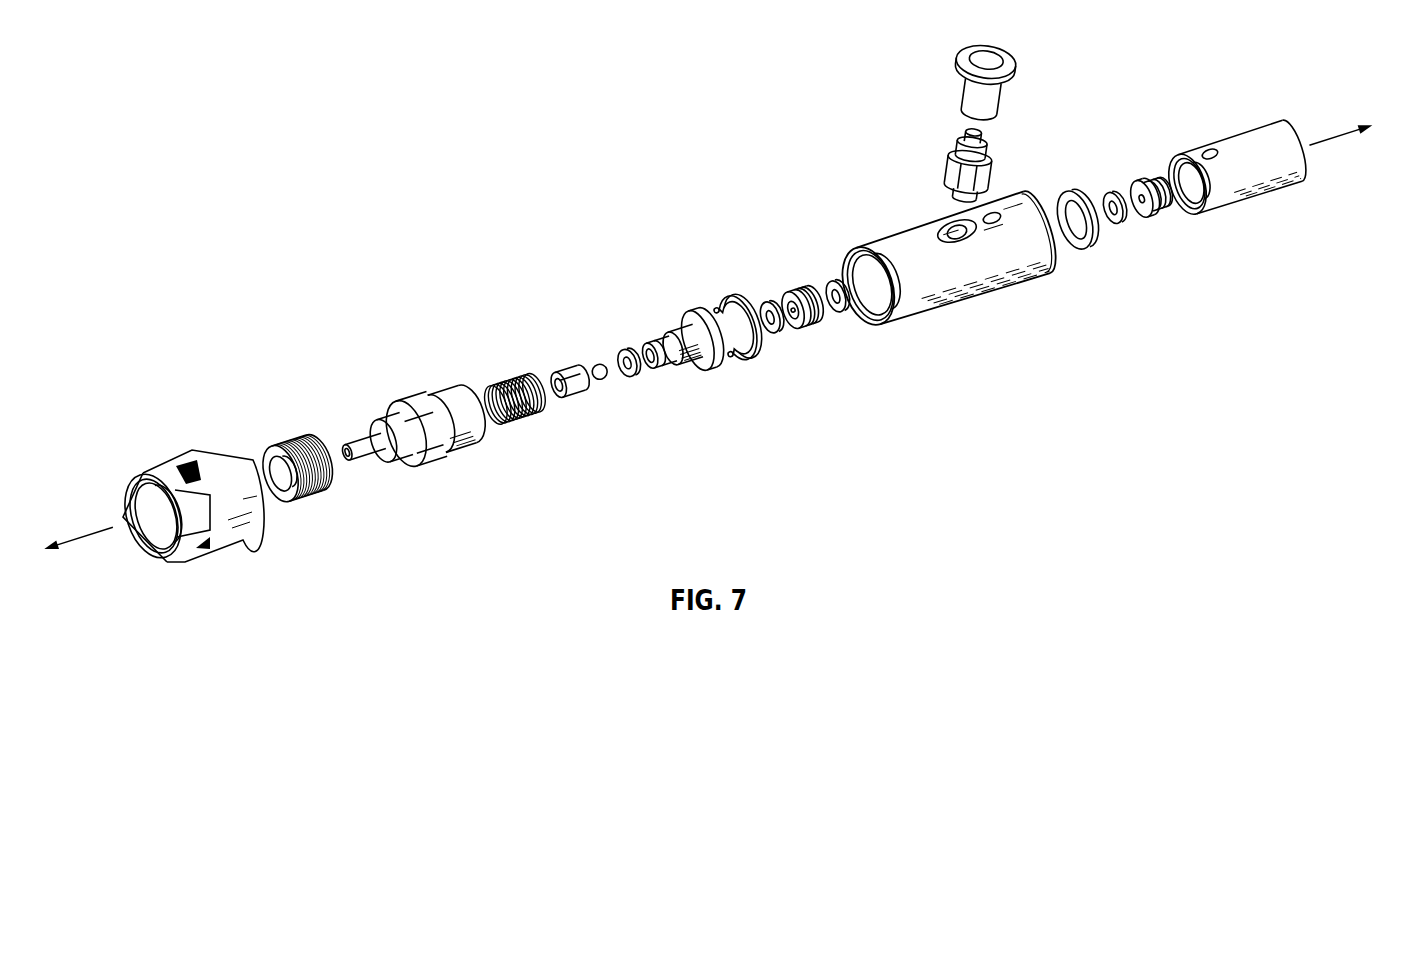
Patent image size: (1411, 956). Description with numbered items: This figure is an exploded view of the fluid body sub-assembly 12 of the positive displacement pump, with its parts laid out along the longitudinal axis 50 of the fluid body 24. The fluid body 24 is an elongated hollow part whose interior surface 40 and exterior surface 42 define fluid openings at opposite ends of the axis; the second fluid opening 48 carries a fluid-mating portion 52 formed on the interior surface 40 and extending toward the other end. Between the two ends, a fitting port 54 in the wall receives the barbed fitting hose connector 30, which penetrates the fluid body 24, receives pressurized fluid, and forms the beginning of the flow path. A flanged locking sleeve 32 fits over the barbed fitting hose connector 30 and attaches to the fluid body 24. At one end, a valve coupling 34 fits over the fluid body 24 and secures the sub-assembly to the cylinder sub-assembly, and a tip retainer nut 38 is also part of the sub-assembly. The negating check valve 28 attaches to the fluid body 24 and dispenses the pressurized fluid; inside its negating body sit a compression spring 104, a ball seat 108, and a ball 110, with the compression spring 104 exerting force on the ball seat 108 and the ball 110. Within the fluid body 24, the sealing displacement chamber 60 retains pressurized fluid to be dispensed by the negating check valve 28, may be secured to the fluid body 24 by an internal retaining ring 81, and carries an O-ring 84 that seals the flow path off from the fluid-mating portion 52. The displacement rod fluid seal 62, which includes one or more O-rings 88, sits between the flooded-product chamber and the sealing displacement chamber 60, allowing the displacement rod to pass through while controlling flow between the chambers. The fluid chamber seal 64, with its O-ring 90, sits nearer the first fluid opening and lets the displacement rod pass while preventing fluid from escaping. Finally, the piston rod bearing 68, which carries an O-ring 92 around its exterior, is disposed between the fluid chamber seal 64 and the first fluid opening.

The fluid body sub-assembly 12 is at (403, 152).
The fluid body 24 is at (915, 285).
The negating check valve 28 is at (409, 413).
The barbed fitting hose connector 30 is at (946, 156).
The flanged locking sleeve 32 is at (1016, 66).
The valve coupling 34 is at (199, 462).
The tip retainer nut 38 is at (295, 444).
The interior surface 40 is at (871, 300).
The exterior surface 42 is at (910, 243).
The second fluid opening 48 is at (862, 320).
The longitudinal axis 50 is at (95, 534).
The fluid-mating portion 52 is at (838, 266).
The fitting port 54 is at (956, 224).
The sealing displacement chamber 60 is at (662, 342).
The displacement rod fluid seal 62 is at (811, 325).
The fluid chamber seal 64 is at (1165, 212).
The piston rod bearing 68 is at (1245, 193).
The internal retaining ring 81 is at (746, 358).
The O-ring 84 is at (632, 378).
The O-rings 88 is at (768, 304).
The O-ring 90 is at (1110, 192).
The O-ring 92 is at (1095, 250).
The compression spring 104 is at (522, 382).
The ball seat 108 is at (575, 398).
The ball 110 is at (597, 370).